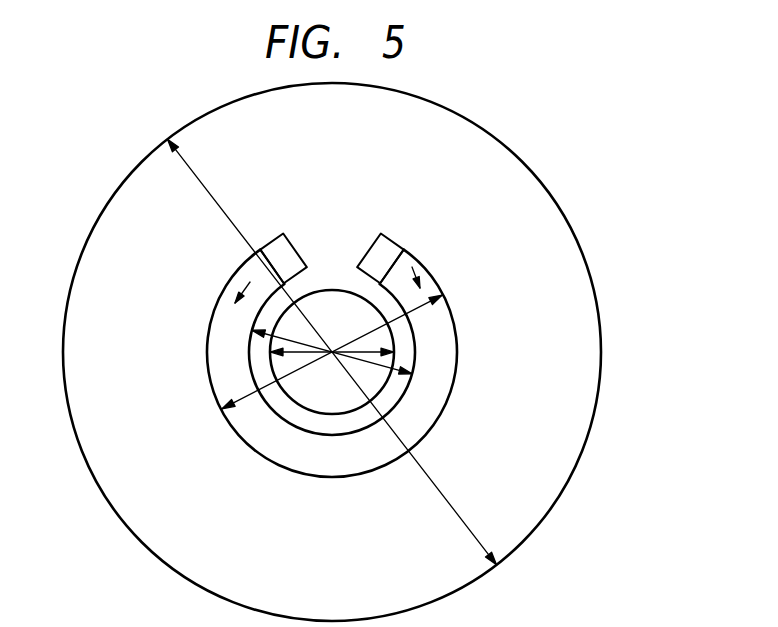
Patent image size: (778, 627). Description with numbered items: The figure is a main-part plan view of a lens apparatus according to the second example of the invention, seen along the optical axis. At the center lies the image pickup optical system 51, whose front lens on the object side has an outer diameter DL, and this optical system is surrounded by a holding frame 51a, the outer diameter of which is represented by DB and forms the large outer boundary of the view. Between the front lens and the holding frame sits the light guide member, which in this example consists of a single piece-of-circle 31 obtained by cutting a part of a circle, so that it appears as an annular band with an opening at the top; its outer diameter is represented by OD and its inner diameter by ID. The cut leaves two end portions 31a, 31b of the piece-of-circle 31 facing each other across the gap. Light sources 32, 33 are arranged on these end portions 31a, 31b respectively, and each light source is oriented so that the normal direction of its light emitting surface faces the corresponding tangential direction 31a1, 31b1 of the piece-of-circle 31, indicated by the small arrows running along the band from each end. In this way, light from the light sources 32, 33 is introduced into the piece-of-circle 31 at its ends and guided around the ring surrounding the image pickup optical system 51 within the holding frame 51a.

The image pickup optical system 51 is at (332, 290).
The holding frame 51a is at (529, 166).
The piece-of-circle 31 is at (414, 412).
The end portion of the piece-of-circle 31a is at (400, 250).
The end portion of the piece-of-circle 31b is at (266, 252).
The tangential direction of the piece-of-circle 31a1 is at (412, 267).
The tangential direction of the piece-of-circle 31b1 is at (250, 282).
The light source 32 is at (375, 238).
The light source 33 is at (286, 237).
The outer diameter of the holding frame DB is at (332, 352).
The outer diameter of the light guide member OD is at (332, 364).
The inner diameter of the light guide member ID is at (332, 361).
The outer diameter of the front lens DL is at (332, 368).